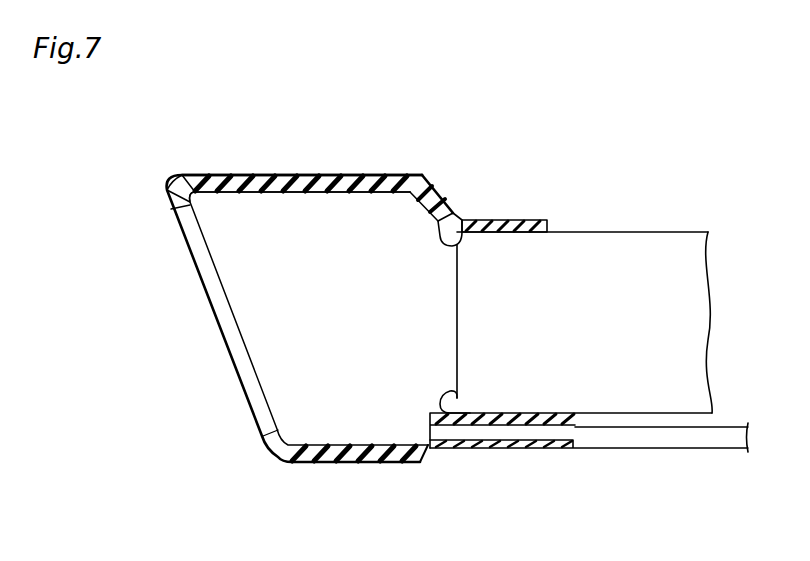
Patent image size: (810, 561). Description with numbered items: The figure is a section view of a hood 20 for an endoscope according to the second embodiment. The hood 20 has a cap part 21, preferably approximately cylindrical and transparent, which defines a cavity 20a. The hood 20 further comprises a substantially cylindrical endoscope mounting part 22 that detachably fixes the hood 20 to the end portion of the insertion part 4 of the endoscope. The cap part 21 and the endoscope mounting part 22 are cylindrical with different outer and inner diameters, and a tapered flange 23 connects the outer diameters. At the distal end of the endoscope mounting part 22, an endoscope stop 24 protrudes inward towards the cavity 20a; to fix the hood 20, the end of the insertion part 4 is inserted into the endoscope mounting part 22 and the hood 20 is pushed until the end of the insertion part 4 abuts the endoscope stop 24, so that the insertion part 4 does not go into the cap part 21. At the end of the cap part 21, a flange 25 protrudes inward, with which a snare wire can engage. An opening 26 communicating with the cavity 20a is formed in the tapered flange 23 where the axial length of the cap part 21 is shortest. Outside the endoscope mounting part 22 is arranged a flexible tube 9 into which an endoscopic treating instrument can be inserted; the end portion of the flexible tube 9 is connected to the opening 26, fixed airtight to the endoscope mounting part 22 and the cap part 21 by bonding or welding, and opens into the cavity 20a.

The insertion part 4 is at (620, 248).
The flexible tube 9 is at (685, 433).
The hood 20 is at (238, 138).
The cavity 20a is at (352, 318).
The cap part 21 is at (350, 178).
The endoscope mounting part 22 is at (532, 222).
The tapered flange 23 is at (432, 186).
The endoscope stop 24 is at (440, 234).
The flange 25 is at (192, 196).
The opening 26 is at (445, 414).